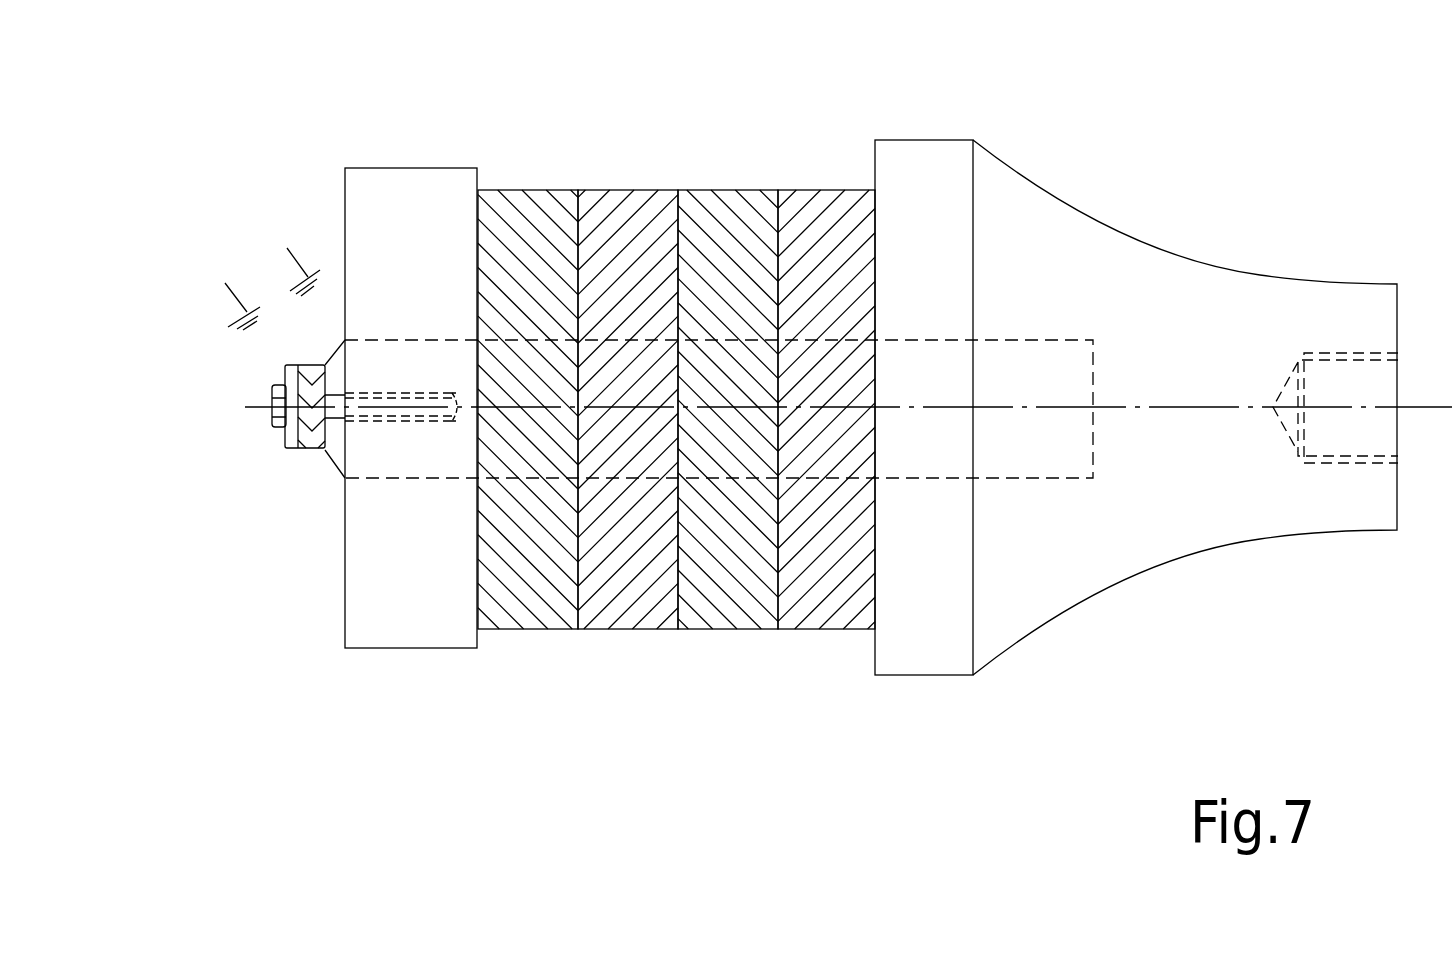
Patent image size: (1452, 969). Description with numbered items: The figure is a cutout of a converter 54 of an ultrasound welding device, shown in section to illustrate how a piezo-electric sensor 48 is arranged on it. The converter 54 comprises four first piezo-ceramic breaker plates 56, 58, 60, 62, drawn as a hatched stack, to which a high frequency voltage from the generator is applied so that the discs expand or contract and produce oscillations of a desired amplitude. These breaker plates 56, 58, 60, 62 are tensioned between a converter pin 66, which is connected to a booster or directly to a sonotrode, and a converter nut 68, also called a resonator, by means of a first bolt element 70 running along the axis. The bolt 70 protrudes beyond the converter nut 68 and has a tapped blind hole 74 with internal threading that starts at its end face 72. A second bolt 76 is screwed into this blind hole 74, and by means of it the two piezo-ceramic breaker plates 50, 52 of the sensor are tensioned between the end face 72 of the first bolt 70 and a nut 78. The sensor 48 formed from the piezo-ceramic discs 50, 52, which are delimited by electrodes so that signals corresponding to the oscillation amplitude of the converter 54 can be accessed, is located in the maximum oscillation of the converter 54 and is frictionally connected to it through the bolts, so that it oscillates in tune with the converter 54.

The piezo-electric sensor 48 is at (213, 222).
The piezo-ceramic breaker plate 50 is at (317, 447).
The piezo-ceramic breaker plate 52 is at (319, 449).
The converter 54 is at (1153, 285).
The first piezo-ceramic breaker plate 56 is at (528, 217).
The first piezo-ceramic breaker plate 58 is at (628, 217).
The first piezo-ceramic breaker plate 60 is at (728, 217).
The first piezo-ceramic breaker plate 62 is at (818, 207).
The converter pin 66 is at (1335, 322).
The converter nut 68 is at (412, 217).
The first bolt element 70 is at (378, 467).
The end face 72 is at (327, 453).
The tapped blind hole 74 is at (456, 422).
The second bolt 76 is at (408, 403).
The nut 78 is at (292, 434).